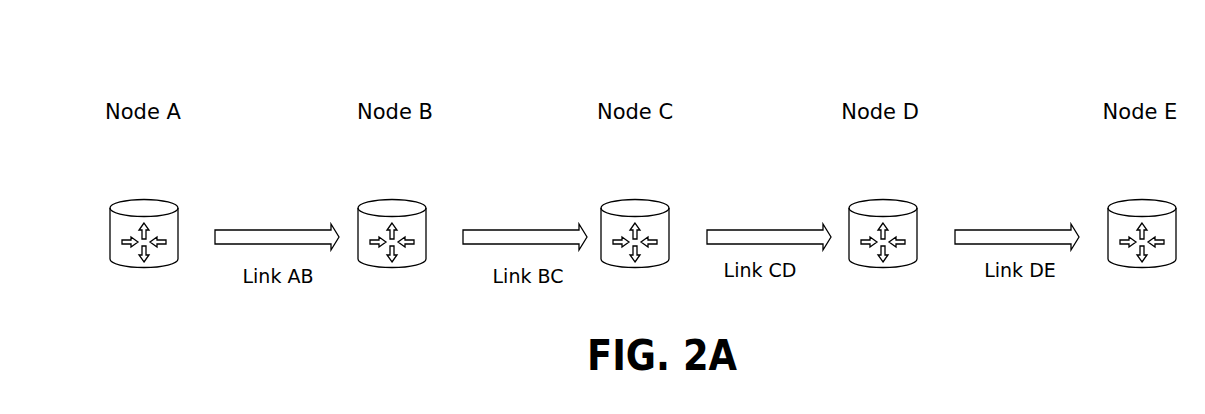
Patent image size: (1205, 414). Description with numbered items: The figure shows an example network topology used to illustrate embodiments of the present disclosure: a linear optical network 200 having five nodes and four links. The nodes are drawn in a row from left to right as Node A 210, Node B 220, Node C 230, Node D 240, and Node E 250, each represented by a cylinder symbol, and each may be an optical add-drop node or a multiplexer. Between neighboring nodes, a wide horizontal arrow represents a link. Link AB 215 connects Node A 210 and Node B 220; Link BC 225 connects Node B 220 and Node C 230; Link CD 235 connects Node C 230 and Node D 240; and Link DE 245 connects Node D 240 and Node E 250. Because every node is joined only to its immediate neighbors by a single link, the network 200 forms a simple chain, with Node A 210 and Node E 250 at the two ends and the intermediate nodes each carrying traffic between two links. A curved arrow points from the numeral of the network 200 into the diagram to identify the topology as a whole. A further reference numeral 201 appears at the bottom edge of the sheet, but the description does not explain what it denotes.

The network 200 is at (283, 66).
The network topology (FIG. 2B) 201 is at (175, 413).
The Node A 210 is at (140, 199).
The Link AB 215 is at (290, 238).
The Node B 220 is at (388, 199).
The Link BC 225 is at (538, 238).
The Node C 230 is at (631, 199).
The Link CD 235 is at (782, 238).
The Node D 240 is at (879, 199).
The Link DE 245 is at (1030, 238).
The Node E 250 is at (1138, 199).